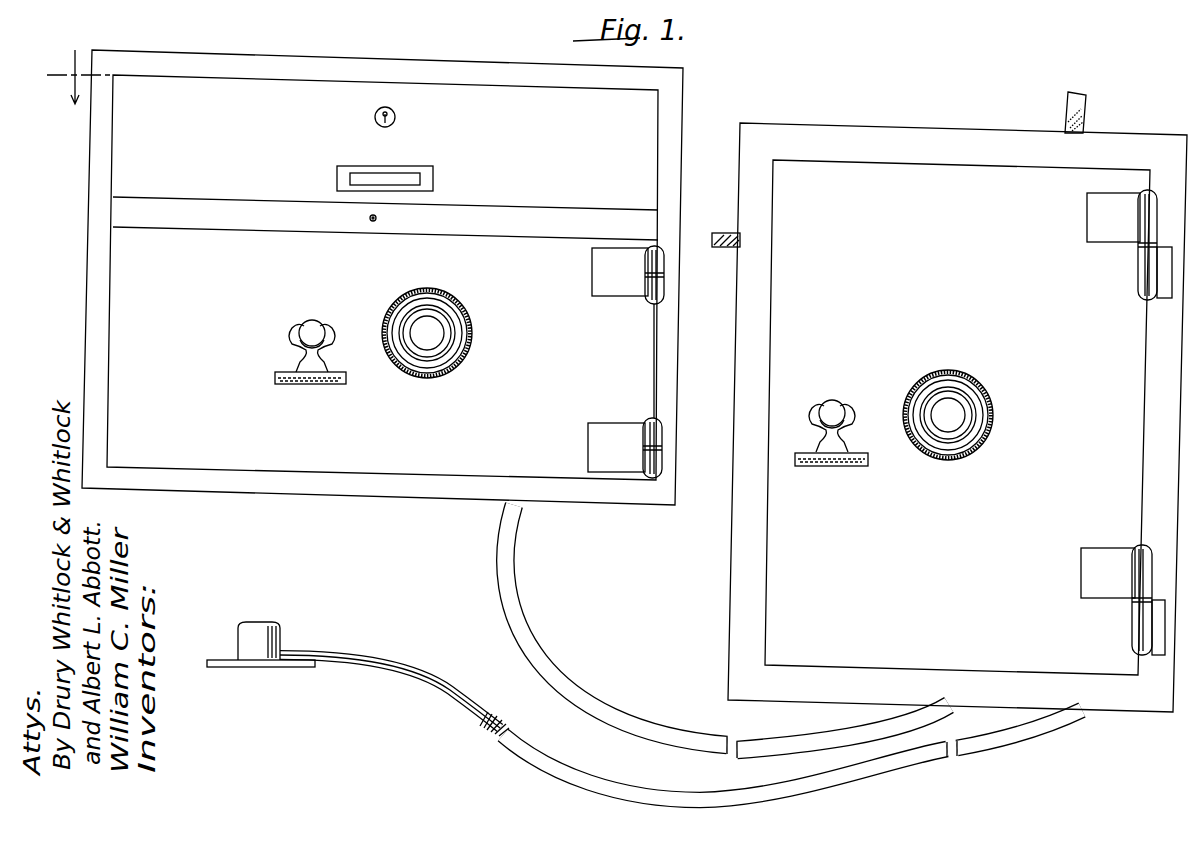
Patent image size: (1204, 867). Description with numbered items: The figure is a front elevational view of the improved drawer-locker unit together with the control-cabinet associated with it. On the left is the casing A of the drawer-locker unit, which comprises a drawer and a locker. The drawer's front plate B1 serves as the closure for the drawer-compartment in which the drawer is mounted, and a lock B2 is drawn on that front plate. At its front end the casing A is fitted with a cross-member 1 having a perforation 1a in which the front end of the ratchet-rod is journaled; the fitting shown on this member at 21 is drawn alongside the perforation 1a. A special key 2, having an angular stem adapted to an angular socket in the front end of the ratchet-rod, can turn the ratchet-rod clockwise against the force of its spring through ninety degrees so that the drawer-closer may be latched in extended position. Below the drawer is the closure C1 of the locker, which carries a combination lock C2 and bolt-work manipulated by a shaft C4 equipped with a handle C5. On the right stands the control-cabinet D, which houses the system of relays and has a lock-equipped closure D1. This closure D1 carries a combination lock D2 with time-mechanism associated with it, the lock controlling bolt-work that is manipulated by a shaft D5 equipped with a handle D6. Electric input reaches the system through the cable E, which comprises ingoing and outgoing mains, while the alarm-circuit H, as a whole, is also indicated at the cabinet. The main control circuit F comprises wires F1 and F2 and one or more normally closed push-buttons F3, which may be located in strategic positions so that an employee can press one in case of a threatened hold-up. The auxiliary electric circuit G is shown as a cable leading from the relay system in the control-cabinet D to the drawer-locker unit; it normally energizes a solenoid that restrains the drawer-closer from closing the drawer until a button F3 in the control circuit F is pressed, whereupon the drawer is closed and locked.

The casing A is at (90, 152).
The special key 2 is at (78, 76).
The cross-member 1 is at (498, 212).
The perforation 1a is at (366, 218).
The pin hole 21 is at (380, 218).
The front plate B1 is at (428, 157).
The keyhole lock B2 is at (398, 116).
The closure of the locker C1 is at (596, 362).
The combination lock C2 is at (448, 310).
The shaft C4 is at (312, 321).
The handle C5 is at (300, 385).
The control-cabinet D is at (894, 126).
The closure of the control-cabinet D1 is at (968, 417).
The combination lock D2 is at (970, 413).
The shaft D5 is at (835, 402).
The handle D6 is at (829, 467).
The cable E is at (728, 233).
The alarm-circuit H is at (1068, 115).
The main control circuit F is at (520, 748).
The wire F1 is at (445, 678).
The wire F2 is at (458, 693).
The push-button F3 is at (258, 622).
The auxiliary electric circuit G is at (553, 680).